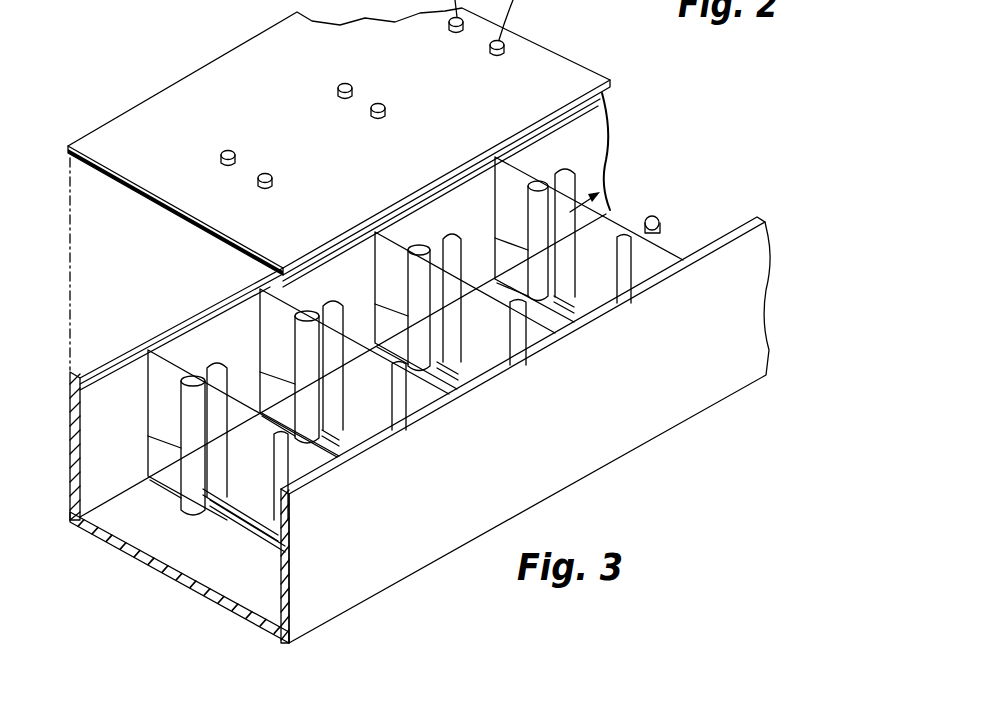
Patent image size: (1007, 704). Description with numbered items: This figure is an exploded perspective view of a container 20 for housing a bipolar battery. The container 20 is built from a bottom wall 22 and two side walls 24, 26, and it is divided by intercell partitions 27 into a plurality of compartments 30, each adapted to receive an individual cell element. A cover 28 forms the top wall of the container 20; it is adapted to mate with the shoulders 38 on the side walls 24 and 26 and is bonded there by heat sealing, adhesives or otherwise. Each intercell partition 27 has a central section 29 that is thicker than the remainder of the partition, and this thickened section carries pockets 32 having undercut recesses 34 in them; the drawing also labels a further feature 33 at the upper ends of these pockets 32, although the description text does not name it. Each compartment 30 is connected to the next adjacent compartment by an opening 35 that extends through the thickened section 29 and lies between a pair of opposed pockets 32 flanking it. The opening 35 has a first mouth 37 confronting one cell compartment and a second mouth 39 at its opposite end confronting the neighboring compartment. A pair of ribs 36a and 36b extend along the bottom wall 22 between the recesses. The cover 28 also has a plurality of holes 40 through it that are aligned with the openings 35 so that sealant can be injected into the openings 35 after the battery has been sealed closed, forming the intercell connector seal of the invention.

The container 20 is at (83, 113).
The bottom wall 22 is at (165, 558).
The side wall 24 is at (588, 144).
The side wall 26 is at (750, 312).
The intercell partition 27 is at (158, 389).
The cover 28 is at (200, 100).
The central section 29 is at (178, 461).
The compartment 30 is at (128, 534).
The pocket 32 is at (367, 501).
The post head 33 is at (428, 250).
The undercut recess 34 is at (345, 300).
The opening 35 is at (226, 595).
The rib 36a is at (232, 525).
The rib 36b is at (292, 531).
The first mouth 37 is at (179, 431).
The shoulder 38 is at (128, 343).
The second mouth 39 is at (548, 286).
The hole 40 is at (268, 173).